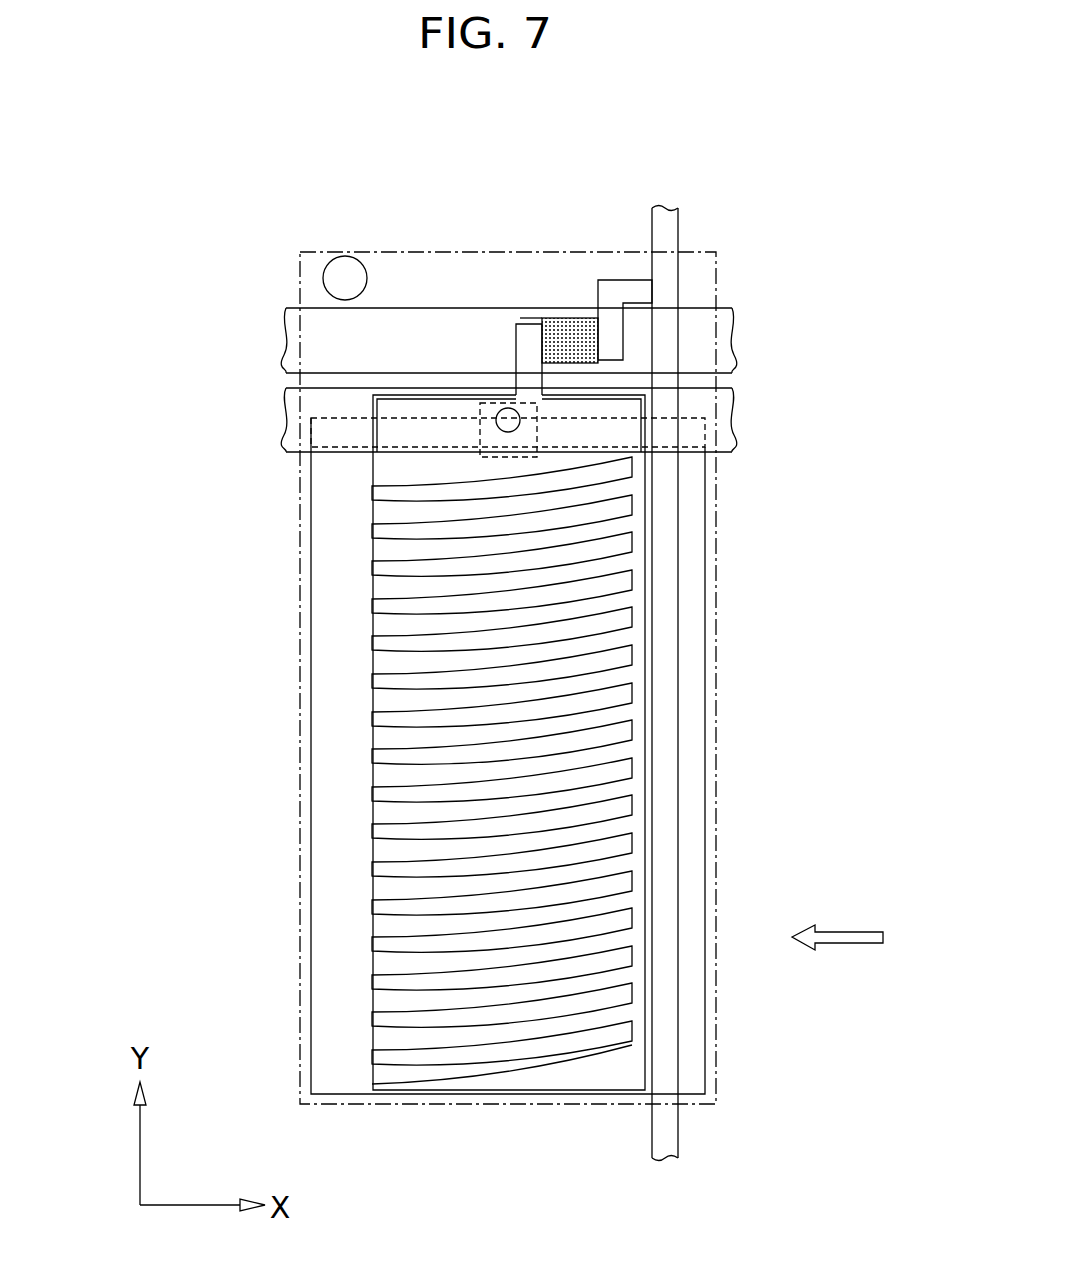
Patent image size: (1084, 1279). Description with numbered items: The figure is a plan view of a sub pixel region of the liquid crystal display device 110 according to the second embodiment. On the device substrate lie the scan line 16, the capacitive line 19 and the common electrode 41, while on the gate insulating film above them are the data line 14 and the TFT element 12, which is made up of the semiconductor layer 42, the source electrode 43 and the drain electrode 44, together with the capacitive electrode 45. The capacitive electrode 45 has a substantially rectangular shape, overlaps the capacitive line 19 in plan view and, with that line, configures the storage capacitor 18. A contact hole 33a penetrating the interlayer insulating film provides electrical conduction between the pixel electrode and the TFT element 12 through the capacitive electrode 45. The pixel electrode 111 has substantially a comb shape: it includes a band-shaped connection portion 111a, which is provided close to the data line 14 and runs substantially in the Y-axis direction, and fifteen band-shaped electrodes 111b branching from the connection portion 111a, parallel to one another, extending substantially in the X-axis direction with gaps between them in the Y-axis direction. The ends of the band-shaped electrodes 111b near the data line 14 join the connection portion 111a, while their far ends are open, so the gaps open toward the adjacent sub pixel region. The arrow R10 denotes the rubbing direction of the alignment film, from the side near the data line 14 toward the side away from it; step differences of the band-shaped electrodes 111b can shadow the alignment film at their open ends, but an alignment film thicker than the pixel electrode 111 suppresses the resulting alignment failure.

The liquid crystal display device 110 is at (768, 180).
The TFT element 12 is at (470, 171).
The drain electrode 44 is at (516, 340).
The semiconductor layer 42 is at (563, 327).
The source electrode 43 is at (597, 297).
The contact hole 33a is at (497, 410).
The scan line 16 is at (288, 340).
The capacitive line 19 is at (288, 428).
The capacitive electrode 45 is at (373, 408).
The storage capacitor 18 is at (410, 452).
The common electrode 41 is at (330, 800).
The data line 14 is at (680, 1140).
The pixel electrode 111 is at (634, 771).
The connection portion 111a is at (640, 537).
The band-shaped electrodes 111b is at (537, 577).
The arrow R10 is at (847, 947).